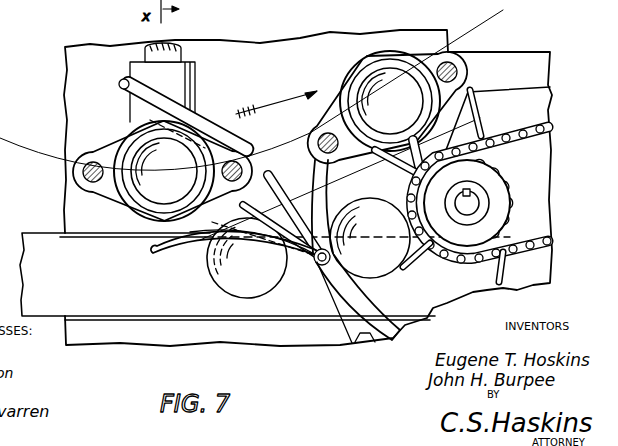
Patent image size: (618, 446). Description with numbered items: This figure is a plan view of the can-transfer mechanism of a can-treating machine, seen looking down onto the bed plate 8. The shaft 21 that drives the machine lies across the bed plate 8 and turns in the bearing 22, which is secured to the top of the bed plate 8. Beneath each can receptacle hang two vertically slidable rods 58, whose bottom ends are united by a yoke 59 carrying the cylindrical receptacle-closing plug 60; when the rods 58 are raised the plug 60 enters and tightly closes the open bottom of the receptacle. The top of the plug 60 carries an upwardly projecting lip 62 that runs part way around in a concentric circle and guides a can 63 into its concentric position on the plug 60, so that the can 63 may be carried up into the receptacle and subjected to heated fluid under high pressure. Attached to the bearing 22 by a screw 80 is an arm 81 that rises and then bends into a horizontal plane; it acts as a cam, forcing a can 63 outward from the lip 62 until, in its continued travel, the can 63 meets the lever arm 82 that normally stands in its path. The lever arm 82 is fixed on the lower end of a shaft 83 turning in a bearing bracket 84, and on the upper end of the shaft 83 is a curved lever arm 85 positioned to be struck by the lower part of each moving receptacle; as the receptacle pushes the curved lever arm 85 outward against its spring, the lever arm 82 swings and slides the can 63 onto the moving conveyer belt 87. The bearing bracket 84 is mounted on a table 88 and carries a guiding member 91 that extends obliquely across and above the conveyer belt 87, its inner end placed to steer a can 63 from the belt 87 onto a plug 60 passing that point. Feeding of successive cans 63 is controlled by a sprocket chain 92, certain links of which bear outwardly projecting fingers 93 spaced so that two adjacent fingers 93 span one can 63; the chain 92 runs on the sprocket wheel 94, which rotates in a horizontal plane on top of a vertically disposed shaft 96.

The bed plate 8 is at (284, 45).
The shaft 21 is at (148, 53).
The bearing 22 is at (195, 72).
The vertically slidable rods 58 is at (308, 147).
The yoke 59 is at (103, 187).
The receptacle-closing plug 60 is at (138, 205).
The lip 62 is at (362, 68).
The can 63 is at (277, 183).
The screw 80 is at (120, 83).
The arm 81 is at (142, 97).
The lever arm 82 is at (258, 207).
The shaft 83 is at (320, 266).
The bearing bracket 84 is at (357, 325).
The curved lever arm 85 is at (170, 200).
The conveyer belt 87 is at (265, 276).
The table 88 is at (551, 100).
The guiding member 91 is at (358, 296).
The sprocket chain 92 is at (500, 133).
The fingers 93 is at (478, 97).
The sprocket wheel 94 is at (510, 181).
The shaft 96 is at (473, 206).